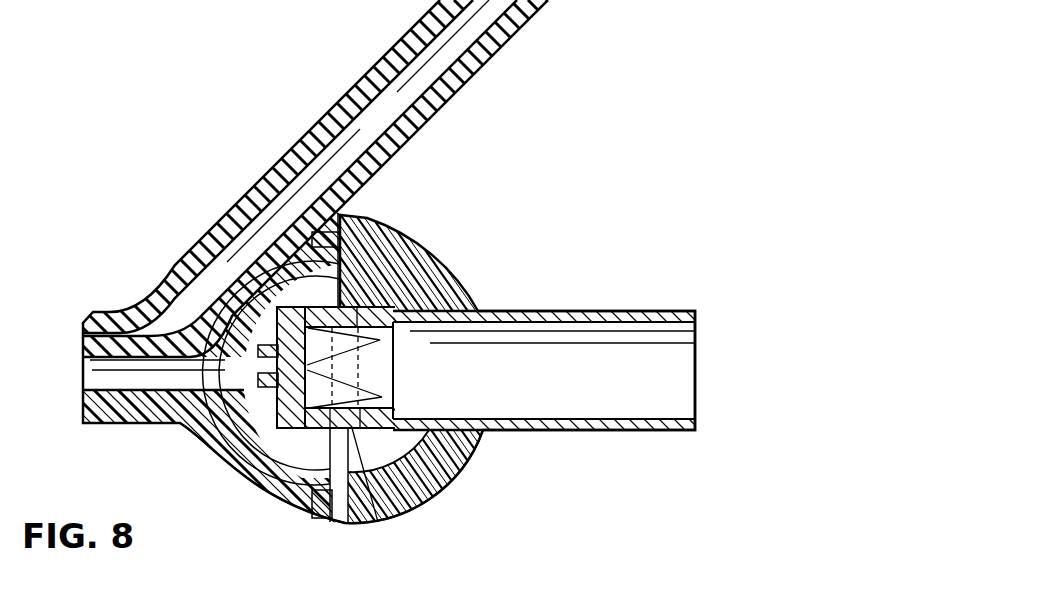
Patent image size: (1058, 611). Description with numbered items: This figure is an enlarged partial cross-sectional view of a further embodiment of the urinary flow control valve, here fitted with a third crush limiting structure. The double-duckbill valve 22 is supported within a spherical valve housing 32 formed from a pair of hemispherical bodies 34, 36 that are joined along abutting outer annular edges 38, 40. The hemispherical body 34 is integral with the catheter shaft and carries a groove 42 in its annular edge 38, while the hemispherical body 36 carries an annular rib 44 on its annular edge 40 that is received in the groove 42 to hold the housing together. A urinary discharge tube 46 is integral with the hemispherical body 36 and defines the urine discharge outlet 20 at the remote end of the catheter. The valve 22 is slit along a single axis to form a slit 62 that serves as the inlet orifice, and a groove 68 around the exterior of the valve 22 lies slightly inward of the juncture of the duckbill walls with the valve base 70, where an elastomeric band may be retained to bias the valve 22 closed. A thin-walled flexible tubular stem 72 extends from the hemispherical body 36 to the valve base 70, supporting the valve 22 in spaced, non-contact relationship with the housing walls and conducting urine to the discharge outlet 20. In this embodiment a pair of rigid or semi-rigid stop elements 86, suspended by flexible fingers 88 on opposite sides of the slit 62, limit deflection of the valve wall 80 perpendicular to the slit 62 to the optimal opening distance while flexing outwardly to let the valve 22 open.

The urine discharge outlet 20 is at (697, 364).
The double-duckbill valve 22 is at (388, 306).
The spherical valve housing 32 is at (253, 496).
The hemispherical body 34 is at (218, 463).
The hemispherical body 36 is at (457, 467).
The annular edge 38 is at (350, 243).
The annular edge 40 is at (345, 212).
The groove 42 is at (318, 488).
The annular rib 44 is at (317, 523).
The urinary discharge tube 46 is at (596, 311).
The slit 62 is at (262, 382).
The groove 68 is at (377, 523).
The valve base 70 is at (338, 305).
The tubular stem 72 is at (400, 417).
The valve wall 80 is at (360, 422).
The stop elements 86 is at (255, 353).
The flexible fingers 88 is at (280, 277).